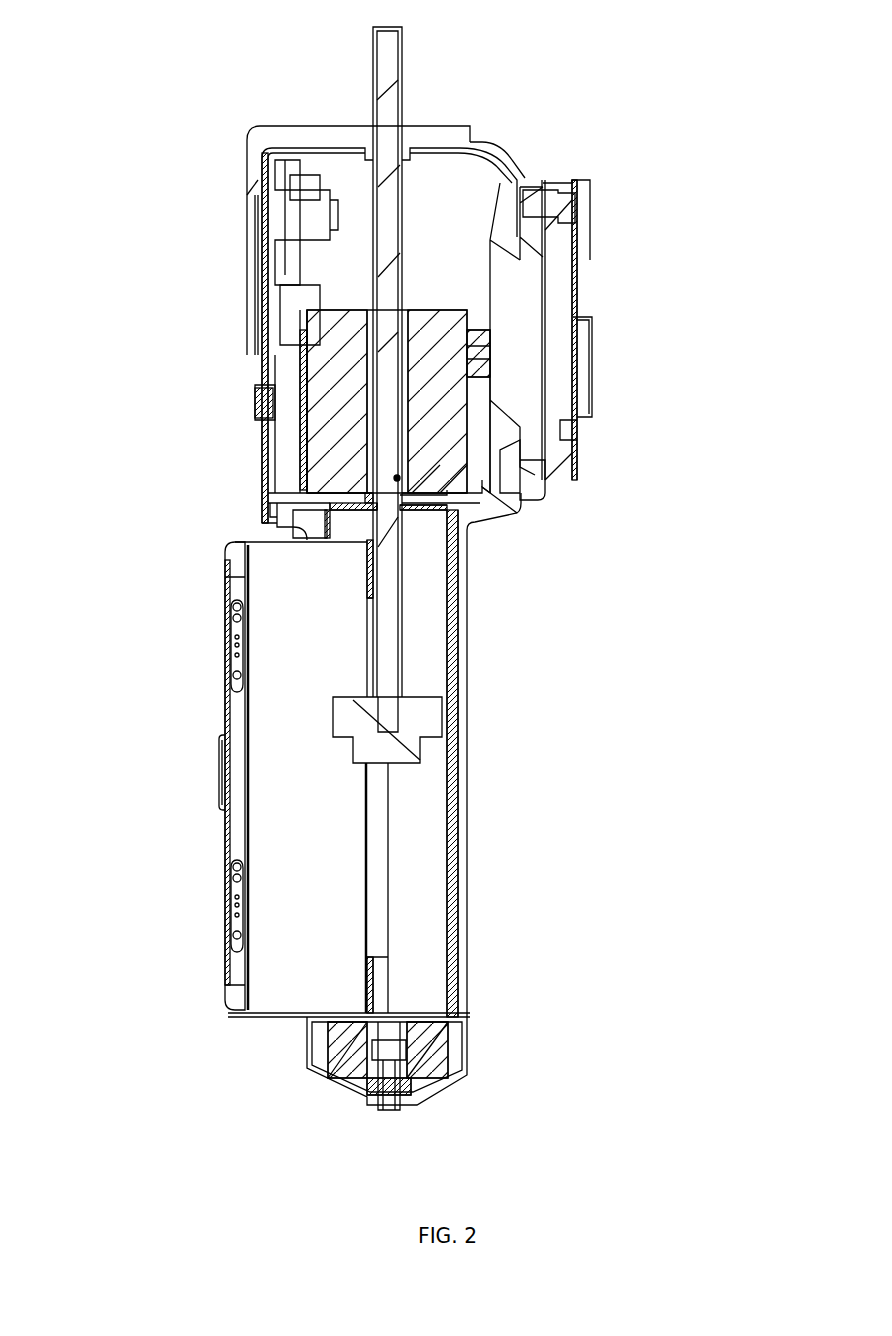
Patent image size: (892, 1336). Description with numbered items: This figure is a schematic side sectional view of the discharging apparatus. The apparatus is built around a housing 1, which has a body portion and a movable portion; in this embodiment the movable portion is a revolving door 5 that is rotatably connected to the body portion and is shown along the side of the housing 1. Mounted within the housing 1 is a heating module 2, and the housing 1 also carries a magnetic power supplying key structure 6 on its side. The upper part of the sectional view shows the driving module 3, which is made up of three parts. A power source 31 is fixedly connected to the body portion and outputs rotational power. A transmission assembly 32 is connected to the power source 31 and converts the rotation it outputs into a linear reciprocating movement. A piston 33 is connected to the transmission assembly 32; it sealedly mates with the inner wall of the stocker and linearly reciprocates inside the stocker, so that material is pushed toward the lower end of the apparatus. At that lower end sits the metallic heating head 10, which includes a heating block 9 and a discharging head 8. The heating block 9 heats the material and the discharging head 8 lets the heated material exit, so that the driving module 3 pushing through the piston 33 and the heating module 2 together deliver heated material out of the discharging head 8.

The housing 1 is at (467, 930).
The heating module 2 is at (392, 750).
The driving module 3 is at (517, 520).
The power source 31 is at (445, 433).
The transmission assembly 32 is at (383, 250).
The piston 33 is at (423, 720).
The revolving door 5 is at (240, 795).
The magnetic power supplying key structure 6 is at (232, 928).
The discharging head 8 is at (367, 1087).
The heating block 9 is at (343, 1062).
The metallic heating head 10 is at (279, 1090).